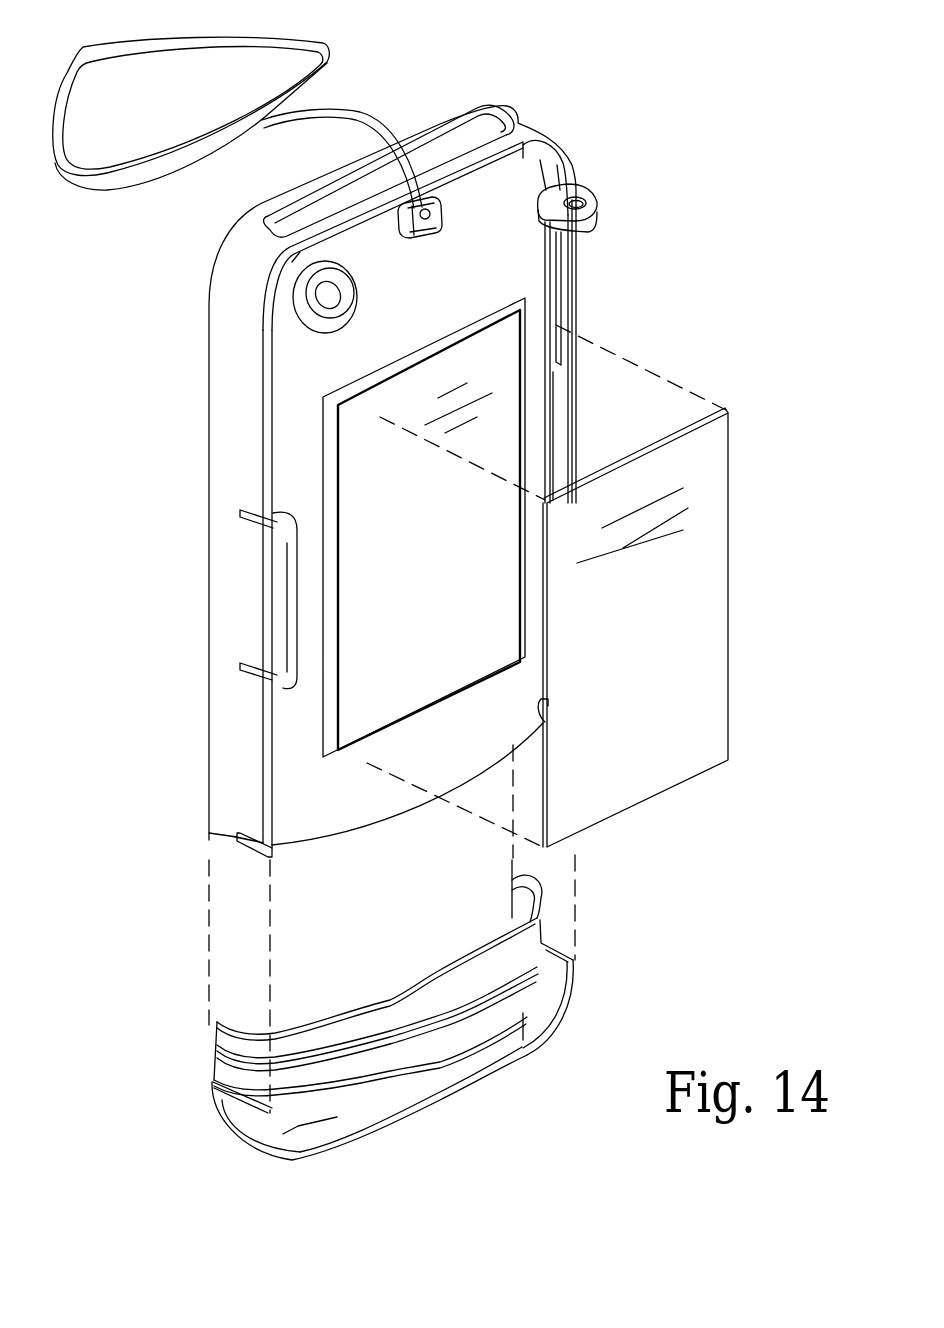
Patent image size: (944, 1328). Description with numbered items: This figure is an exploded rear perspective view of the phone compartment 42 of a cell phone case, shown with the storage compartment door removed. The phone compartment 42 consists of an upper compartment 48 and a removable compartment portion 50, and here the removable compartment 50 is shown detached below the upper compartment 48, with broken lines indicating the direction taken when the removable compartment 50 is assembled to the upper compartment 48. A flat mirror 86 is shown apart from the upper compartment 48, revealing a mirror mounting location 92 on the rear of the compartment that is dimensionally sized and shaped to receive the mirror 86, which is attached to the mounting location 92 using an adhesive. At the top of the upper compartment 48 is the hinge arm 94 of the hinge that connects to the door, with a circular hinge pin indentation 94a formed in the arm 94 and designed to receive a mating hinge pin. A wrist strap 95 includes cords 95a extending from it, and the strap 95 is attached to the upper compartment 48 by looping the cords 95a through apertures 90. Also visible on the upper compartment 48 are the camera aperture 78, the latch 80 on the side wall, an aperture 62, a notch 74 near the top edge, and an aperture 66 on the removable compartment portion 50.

The phone compartment 42 is at (733, 920).
The upper compartment 48 is at (209, 740).
The removable compartment portion 50 is at (250, 1133).
The aperture 62 is at (278, 230).
The aperture 66 is at (522, 1053).
The notch 74 is at (437, 166).
The camera aperture 78 is at (350, 302).
The latch 80 is at (275, 514).
The mirror 86 is at (730, 572).
The apertures 90 is at (444, 212).
The mirror mounting location 92 is at (438, 558).
The hinge arm 94 is at (597, 214).
The circular hinge pin indentation 94a is at (582, 200).
The wrist strap 95 is at (128, 188).
The cords 95a is at (335, 130).